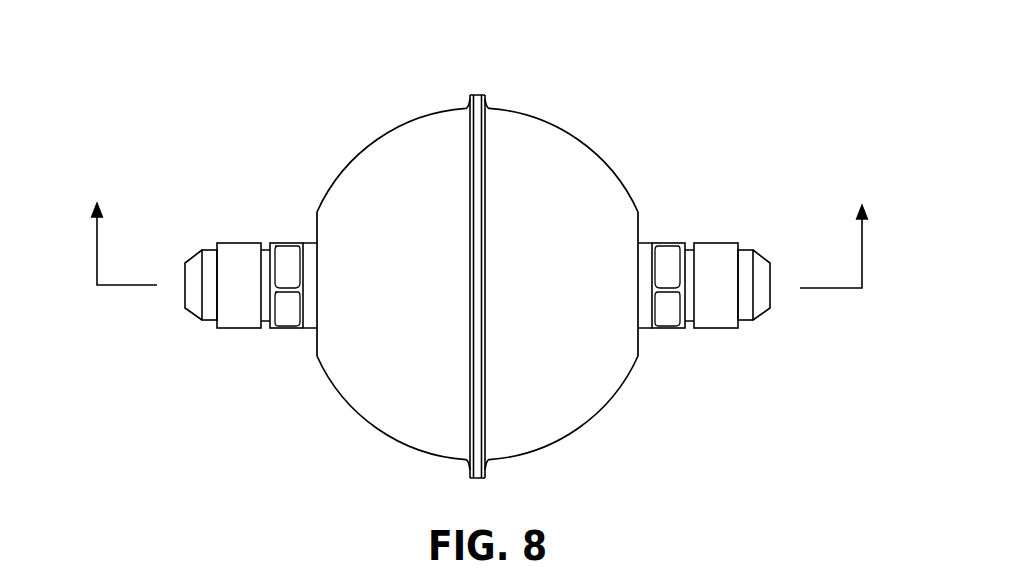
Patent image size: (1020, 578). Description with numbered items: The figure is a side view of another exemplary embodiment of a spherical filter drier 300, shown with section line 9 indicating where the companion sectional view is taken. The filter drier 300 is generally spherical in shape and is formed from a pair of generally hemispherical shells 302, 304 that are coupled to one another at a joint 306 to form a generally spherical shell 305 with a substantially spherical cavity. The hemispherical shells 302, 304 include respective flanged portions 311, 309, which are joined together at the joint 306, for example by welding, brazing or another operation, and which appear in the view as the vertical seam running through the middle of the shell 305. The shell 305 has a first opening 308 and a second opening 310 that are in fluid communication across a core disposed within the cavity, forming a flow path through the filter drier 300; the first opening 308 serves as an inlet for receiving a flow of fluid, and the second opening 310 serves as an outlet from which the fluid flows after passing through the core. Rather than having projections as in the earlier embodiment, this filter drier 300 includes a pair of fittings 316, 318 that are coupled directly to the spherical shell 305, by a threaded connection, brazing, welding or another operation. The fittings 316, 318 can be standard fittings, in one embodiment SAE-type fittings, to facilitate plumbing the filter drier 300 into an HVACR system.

The filter drier 300 is at (480, 253).
The hemispherical shell 302 is at (608, 203).
The hemispherical shell 304 is at (346, 203).
The spherical shell 305 is at (481, 291).
The joint 306 is at (482, 251).
The first opening 308 is at (778, 306).
The flanged portion 309 is at (487, 100).
The second opening 310 is at (178, 303).
The flanged portion 311 is at (469, 98).
The fitting 316 is at (712, 253).
The fitting 318 is at (237, 243).
The section line 9- 9 is at (478, 243).